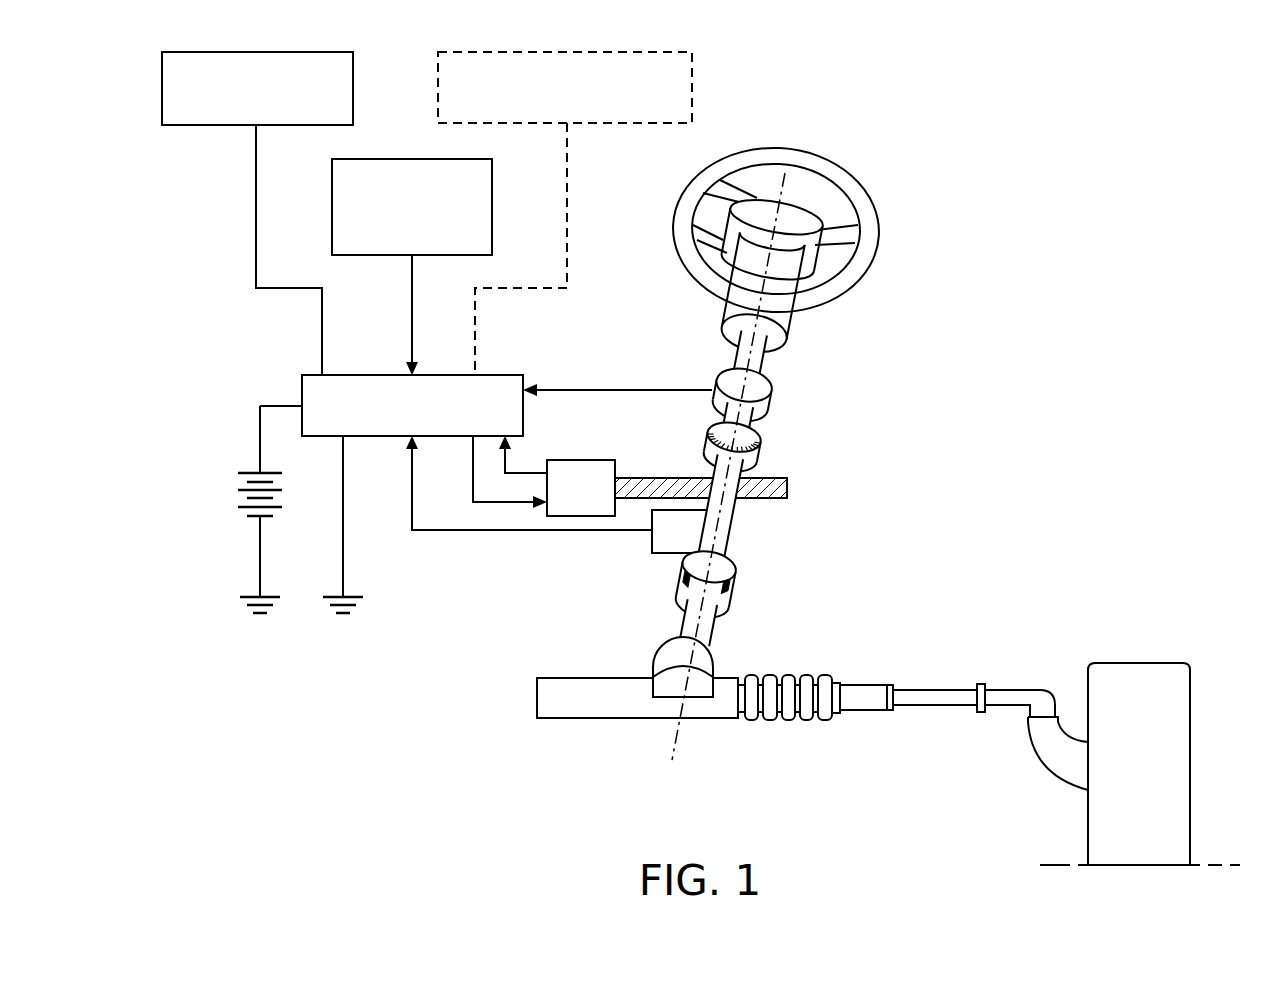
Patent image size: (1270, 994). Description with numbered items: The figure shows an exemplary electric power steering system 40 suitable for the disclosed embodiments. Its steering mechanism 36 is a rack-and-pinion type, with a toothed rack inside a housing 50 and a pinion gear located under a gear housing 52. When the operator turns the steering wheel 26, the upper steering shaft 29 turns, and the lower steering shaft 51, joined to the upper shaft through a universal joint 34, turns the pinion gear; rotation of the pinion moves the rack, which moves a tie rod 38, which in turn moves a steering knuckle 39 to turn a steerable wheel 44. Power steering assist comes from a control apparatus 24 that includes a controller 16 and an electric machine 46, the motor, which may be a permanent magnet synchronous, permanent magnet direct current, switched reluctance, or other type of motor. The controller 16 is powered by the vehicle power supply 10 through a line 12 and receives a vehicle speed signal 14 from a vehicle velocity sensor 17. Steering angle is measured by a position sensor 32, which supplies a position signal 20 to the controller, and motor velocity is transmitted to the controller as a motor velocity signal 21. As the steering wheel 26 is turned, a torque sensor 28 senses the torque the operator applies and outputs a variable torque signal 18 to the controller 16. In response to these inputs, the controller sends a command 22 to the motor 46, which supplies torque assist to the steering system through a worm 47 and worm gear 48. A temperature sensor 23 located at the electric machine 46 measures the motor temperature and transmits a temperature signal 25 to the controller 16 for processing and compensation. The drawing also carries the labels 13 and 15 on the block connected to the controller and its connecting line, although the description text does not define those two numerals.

The vehicle power supply 10 is at (247, 497).
The line 12 is at (275, 400).
The storage media 13 is at (192, 126).
The vehicle speed signal 14 is at (412, 270).
The storage media connection line 15 is at (257, 192).
The controller 16 is at (380, 375).
The vehicle velocity sensor 17 is at (412, 158).
The torque signal 18 is at (630, 390).
The position signal 20 is at (530, 533).
The motor velocity signal 21 is at (533, 473).
The command 22 is at (488, 505).
The temperature sensor 23 is at (693, 102).
The control apparatus 24 is at (972, 372).
The temperature signal 25 is at (568, 187).
The steering wheel 26 is at (828, 180).
The torque sensor 28 is at (765, 390).
The upper steering shaft 29 is at (740, 353).
The position sensor 32 is at (650, 545).
The universal joint 34 is at (730, 580).
The steering mechanism 36 is at (822, 658).
The tie rod 38 is at (930, 697).
The steering knuckle 39 is at (1055, 750).
The electric power steering system 40 is at (1054, 473).
The steerable wheel 44 is at (1127, 678).
The electric machine 46 is at (592, 460).
The worm 47 is at (777, 490).
The worm gear 48 is at (745, 448).
The housing 50 is at (577, 708).
The lower steering shaft 51 is at (705, 633).
The gear housing 52 is at (663, 657).